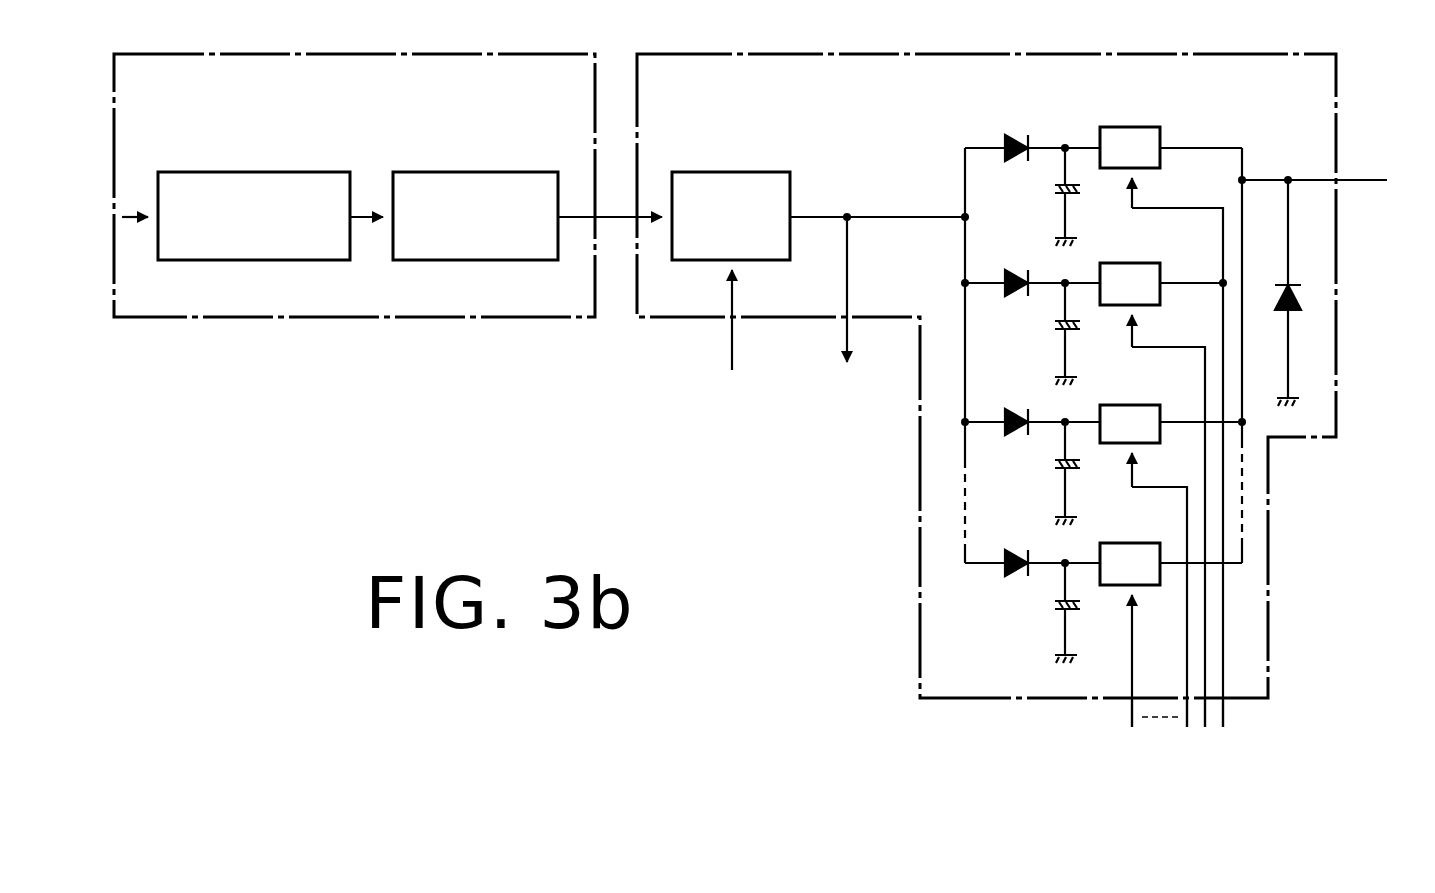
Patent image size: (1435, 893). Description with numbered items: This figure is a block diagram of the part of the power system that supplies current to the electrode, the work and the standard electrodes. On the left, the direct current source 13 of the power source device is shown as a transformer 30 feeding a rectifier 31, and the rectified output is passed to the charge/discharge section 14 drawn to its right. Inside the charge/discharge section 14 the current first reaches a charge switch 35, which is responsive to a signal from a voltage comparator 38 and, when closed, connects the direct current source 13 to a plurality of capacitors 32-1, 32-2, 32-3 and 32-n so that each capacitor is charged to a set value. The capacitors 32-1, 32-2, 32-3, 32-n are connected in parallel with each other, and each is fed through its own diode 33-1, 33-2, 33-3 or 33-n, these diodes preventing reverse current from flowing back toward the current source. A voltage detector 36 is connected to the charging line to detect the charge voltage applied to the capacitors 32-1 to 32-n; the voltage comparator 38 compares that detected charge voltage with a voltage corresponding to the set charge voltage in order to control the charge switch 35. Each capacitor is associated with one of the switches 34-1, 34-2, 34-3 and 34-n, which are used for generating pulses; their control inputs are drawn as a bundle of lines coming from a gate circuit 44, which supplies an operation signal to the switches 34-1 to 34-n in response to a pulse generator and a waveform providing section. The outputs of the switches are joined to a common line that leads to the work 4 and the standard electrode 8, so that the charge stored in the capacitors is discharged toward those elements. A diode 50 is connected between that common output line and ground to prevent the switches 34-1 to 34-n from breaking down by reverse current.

The direct current source 13 is at (388, 317).
The charge/discharge section 14 is at (922, 655).
The transformer 30 is at (335, 172).
The rectifier 31 is at (538, 172).
The charge switch 35 is at (781, 170).
The voltage detector 36 is at (844, 310).
The voltage comparator 38 is at (729, 337).
The diode 33-1 is at (1016, 134).
The diode 33-2 is at (1016, 270).
The diode 33-3 is at (1016, 409).
The diode 33-n is at (1016, 550).
The capacitor 32-1 is at (1051, 188).
The capacitor 32-2 is at (1051, 328).
The capacitor 32-3 is at (1051, 468).
The capacitor 32-n is at (1051, 606).
The switch 34-1 is at (1158, 108).
The switch 34-2 is at (1158, 250).
The switch 34-3 is at (1158, 387).
The switch 34-n is at (1158, 525).
The gate circuit 44 is at (1233, 731).
The work 4 is at (1338, 180).
The standard electrode 8 is at (1338, 180).
The diode 50 is at (1301, 293).